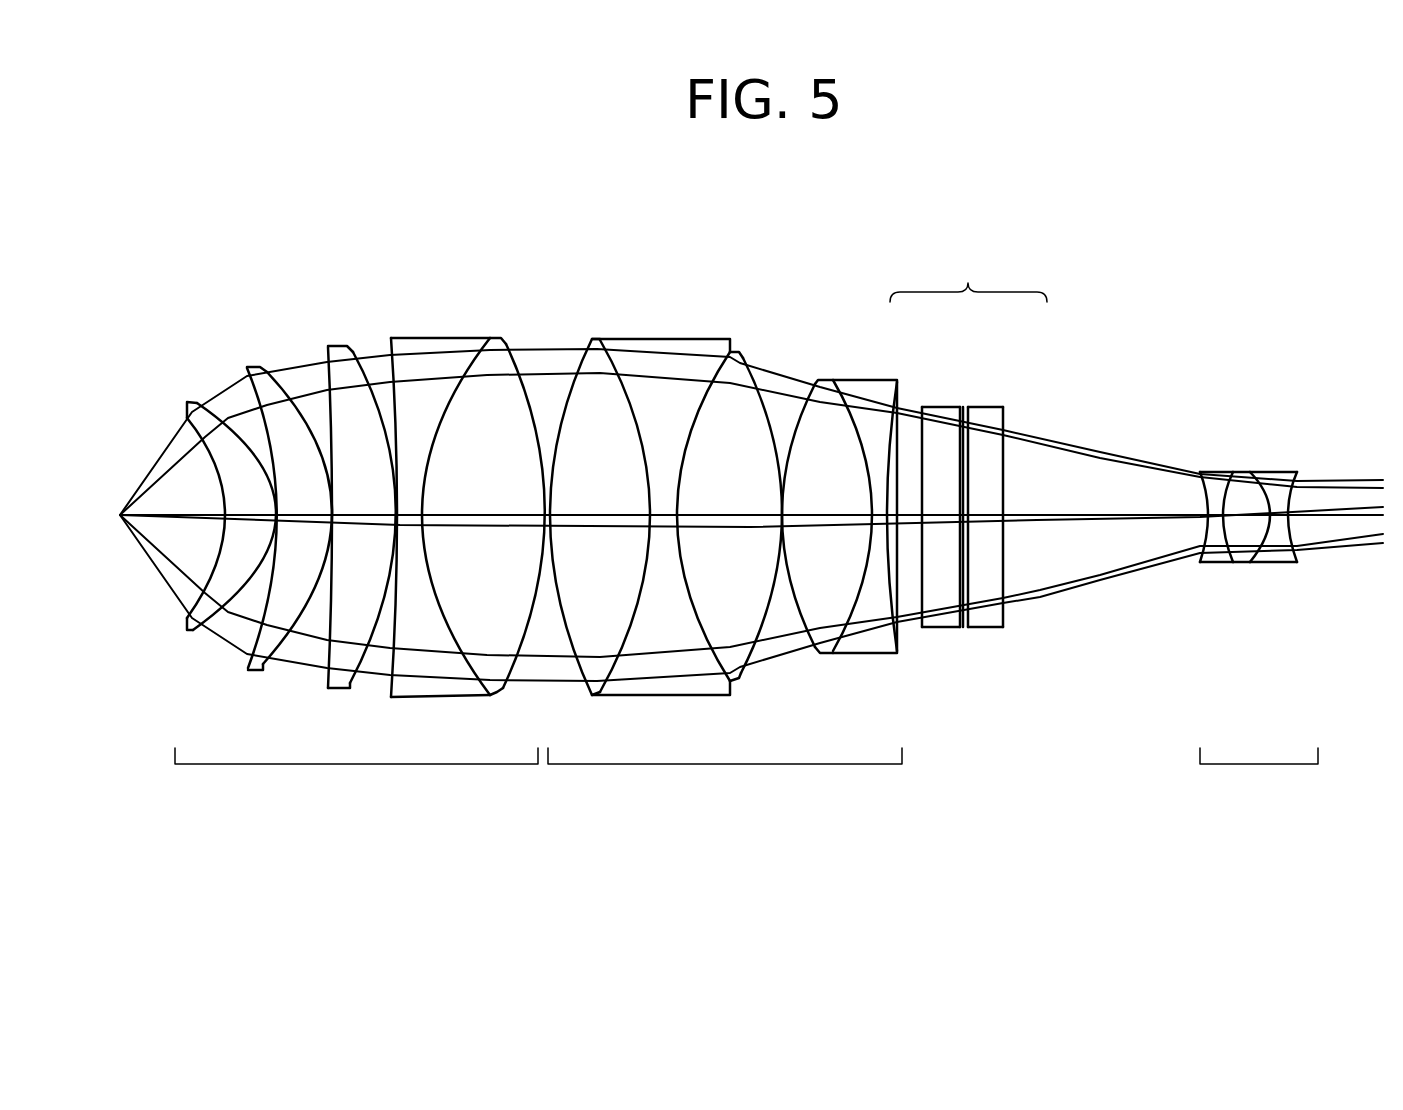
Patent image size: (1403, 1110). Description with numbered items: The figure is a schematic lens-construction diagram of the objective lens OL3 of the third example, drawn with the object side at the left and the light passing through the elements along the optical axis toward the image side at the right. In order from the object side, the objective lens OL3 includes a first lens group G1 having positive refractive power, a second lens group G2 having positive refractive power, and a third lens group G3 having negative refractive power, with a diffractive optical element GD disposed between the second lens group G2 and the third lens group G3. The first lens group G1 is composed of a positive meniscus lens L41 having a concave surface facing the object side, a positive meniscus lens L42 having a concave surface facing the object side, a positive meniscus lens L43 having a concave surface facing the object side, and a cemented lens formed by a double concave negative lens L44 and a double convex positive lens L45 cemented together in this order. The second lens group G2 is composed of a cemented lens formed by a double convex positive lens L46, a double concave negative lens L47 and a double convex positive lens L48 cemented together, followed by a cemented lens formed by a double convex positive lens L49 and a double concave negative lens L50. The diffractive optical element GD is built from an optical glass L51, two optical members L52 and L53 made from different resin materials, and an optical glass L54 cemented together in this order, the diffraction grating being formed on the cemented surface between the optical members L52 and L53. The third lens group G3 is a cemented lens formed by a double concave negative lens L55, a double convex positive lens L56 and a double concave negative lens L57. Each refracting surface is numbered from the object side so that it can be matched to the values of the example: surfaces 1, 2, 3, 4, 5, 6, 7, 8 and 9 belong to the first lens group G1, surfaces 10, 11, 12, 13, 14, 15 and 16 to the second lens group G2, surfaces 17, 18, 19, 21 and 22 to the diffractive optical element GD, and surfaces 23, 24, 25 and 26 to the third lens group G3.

The objective lens OL3 is at (1256, 214).
The first lens group G1 is at (356, 770).
The second lens group G2 is at (725, 771).
The third lens group G3 is at (1259, 771).
The diffractive optical element GD is at (973, 497).
The positive meniscus lens L41 is at (195, 402).
The positive meniscus lens L42 is at (253, 367).
The positive meniscus lens L43 is at (342, 346).
The double concave negative lens L44 is at (428, 338).
The double convex positive lens L45 is at (493, 338).
The double convex positive lens L46 is at (592, 339).
The double concave negative lens L47 is at (663, 339).
The double convex positive lens L48 is at (735, 352).
The double convex positive lens L49 is at (822, 380).
The double concave negative lens L50 is at (877, 380).
The optical glass L51 is at (935, 407).
The optical member L52 is at (961, 407).
The optical member L53 is at (966, 407).
The optical glass L54 is at (992, 407).
The double concave negative lens L55 is at (1210, 472).
The double convex positive lens L56 is at (1243, 472).
The double concave negative lens L57 is at (1290, 472).
The surface number 1 is at (203, 593).
The surface number 2 is at (228, 620).
The surface number 3 is at (256, 632).
The surface number 4 is at (292, 640).
The surface number 5 is at (328, 640).
The surface number 6 is at (374, 650).
The surface number 7 is at (393, 652).
The surface number 8 is at (457, 660).
The surface number 9 is at (518, 675).
The surface number 10 is at (573, 660).
The surface number 11 is at (612, 665).
The surface number 12 is at (699, 625).
The surface number 13 is at (757, 645).
The surface number 14 is at (799, 623).
The surface number 15 is at (838, 620).
The surface number 16 is at (896, 620).
The surface number 17 is at (921, 598).
The surface number 18 is at (958, 590).
The surface number 19 is at (963, 600).
The surface number 21 is at (968, 600).
The surface number 22 is at (1003, 612).
The surface number 23 is at (1200, 532).
The surface number 24 is at (1226, 562).
The surface number 25 is at (1246, 562).
The surface number 26 is at (1296, 552).